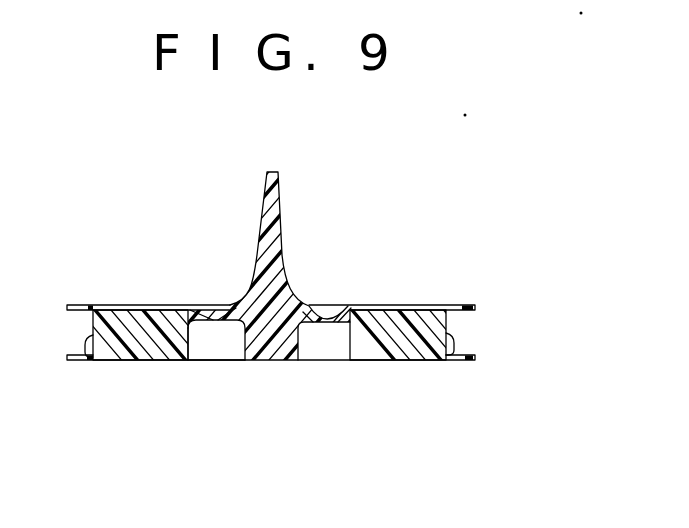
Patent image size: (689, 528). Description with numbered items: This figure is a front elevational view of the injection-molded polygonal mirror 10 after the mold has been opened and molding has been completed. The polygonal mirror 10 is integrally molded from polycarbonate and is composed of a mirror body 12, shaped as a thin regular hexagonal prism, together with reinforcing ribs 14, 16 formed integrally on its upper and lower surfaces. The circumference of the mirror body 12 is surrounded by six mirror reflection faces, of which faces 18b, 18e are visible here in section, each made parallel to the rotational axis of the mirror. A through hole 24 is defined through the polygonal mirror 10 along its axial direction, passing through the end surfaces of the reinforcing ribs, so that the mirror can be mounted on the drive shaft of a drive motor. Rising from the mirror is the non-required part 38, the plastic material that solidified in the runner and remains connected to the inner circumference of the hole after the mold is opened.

The polygonal mirror 10 is at (417, 297).
The mirror body 12 is at (367, 318).
The reinforcing rib 14 is at (475, 308).
The reinforcing rib 16 is at (475, 360).
The reflection face 18b is at (90, 357).
The reflection face 18e is at (448, 357).
The through hole 24 is at (193, 357).
The non-required part 38 is at (282, 238).